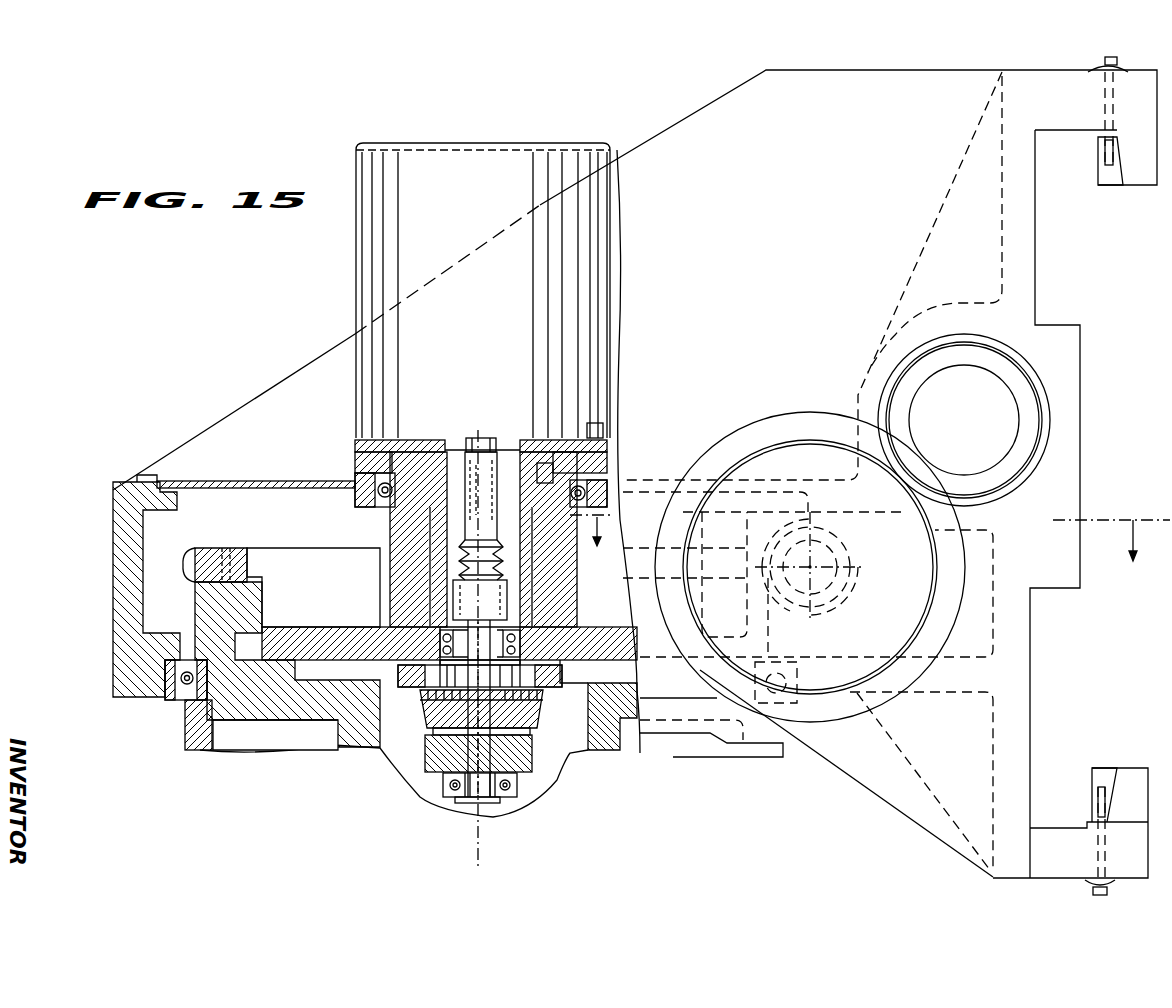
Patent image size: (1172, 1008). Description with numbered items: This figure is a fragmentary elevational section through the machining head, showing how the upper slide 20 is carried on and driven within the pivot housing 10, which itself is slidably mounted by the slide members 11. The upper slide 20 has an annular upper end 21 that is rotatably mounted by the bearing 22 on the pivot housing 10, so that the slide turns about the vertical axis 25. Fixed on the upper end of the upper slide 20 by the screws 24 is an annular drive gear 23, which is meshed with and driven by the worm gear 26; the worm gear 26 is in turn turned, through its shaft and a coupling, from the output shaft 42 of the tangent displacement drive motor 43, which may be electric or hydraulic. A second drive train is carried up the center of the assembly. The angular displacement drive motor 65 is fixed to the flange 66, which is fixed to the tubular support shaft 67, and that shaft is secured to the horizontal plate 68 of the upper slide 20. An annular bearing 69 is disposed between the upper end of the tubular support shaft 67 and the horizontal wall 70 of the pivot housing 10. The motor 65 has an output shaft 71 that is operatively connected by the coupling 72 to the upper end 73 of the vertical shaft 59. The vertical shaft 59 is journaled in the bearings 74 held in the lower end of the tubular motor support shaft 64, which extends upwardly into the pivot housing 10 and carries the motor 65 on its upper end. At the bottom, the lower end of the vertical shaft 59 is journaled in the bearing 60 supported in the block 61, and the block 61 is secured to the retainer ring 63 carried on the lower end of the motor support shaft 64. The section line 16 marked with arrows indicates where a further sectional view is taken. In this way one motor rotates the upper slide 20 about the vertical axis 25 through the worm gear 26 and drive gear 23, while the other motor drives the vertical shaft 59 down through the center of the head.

The pivot housing 10 is at (258, 384).
The slide members 11 is at (1098, 163).
The section line 16— 16 is at (870, 553).
The upper slide 20 is at (195, 756).
The annular upper end 21 is at (200, 723).
The bearing 22 is at (167, 701).
The annular drive gear 23 is at (297, 552).
The screws 24 is at (228, 546).
The vertical axis 25 is at (480, 850).
The worm gear 26 is at (850, 562).
The output shaft 42 is at (840, 604).
The drive motor 43 is at (770, 407).
The vertical shaft 59 is at (473, 785).
The bearing 60 is at (513, 787).
The block 61 is at (570, 752).
The retainer ring 63 is at (396, 686).
The motor support shaft 64 is at (569, 627).
The angular displacement drive motor 65 is at (483, 290).
The flange 66 is at (603, 470).
The tubular support shaft 67 is at (565, 599).
The horizontal plate 68 is at (571, 661).
The annular bearing 69 is at (378, 480).
The horizontal wall 70 is at (258, 480).
The output shaft 71 is at (481, 446).
The coupling 72 is at (473, 520).
The upper end 73 is at (425, 715).
The bearings 74 is at (432, 634).